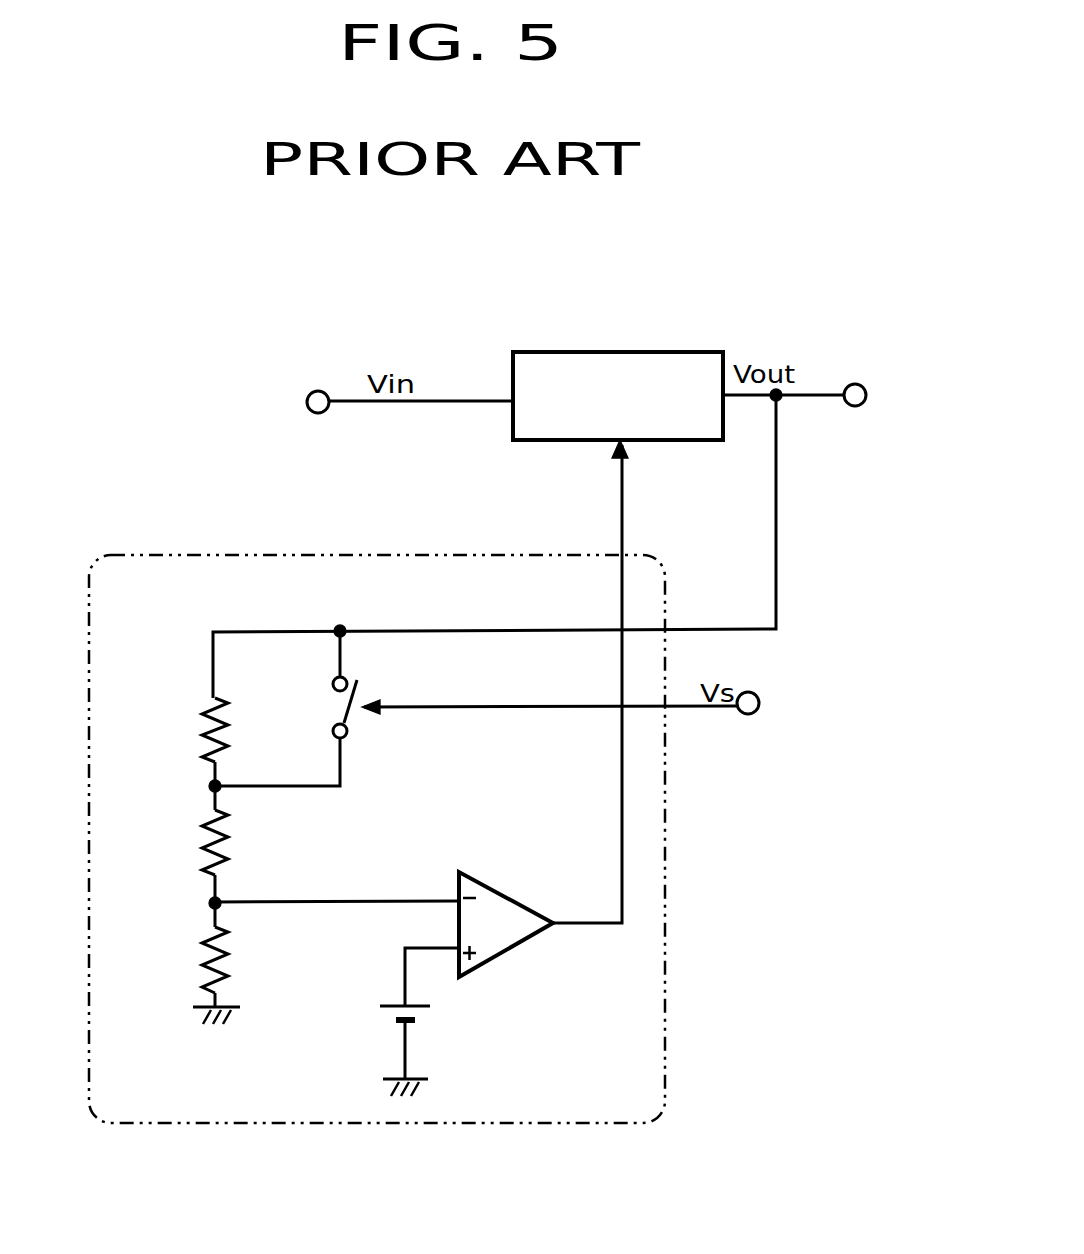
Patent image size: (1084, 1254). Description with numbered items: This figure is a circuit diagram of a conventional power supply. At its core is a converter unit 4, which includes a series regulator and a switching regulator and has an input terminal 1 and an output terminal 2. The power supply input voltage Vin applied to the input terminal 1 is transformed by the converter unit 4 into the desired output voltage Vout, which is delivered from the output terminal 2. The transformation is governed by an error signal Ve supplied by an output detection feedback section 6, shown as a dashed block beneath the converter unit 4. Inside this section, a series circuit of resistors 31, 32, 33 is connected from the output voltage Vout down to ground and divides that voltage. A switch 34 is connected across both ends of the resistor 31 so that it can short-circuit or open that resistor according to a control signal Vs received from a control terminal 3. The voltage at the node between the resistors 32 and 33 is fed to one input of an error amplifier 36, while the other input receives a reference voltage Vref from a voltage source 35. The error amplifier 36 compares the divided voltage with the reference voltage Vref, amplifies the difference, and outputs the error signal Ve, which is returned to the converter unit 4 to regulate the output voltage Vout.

The input terminal 1 is at (306, 403).
The output terminal 2 is at (866, 402).
The control terminal 3 is at (760, 708).
The converter unit 4 is at (590, 351).
The output detection feedback section 6 is at (196, 554).
The resistor 31 is at (200, 727).
The resistor 32 is at (200, 845).
The resistor 33 is at (200, 958).
The switch 34 is at (365, 672).
The voltage source 35 is at (430, 1016).
The error amplifier 36 is at (515, 945).